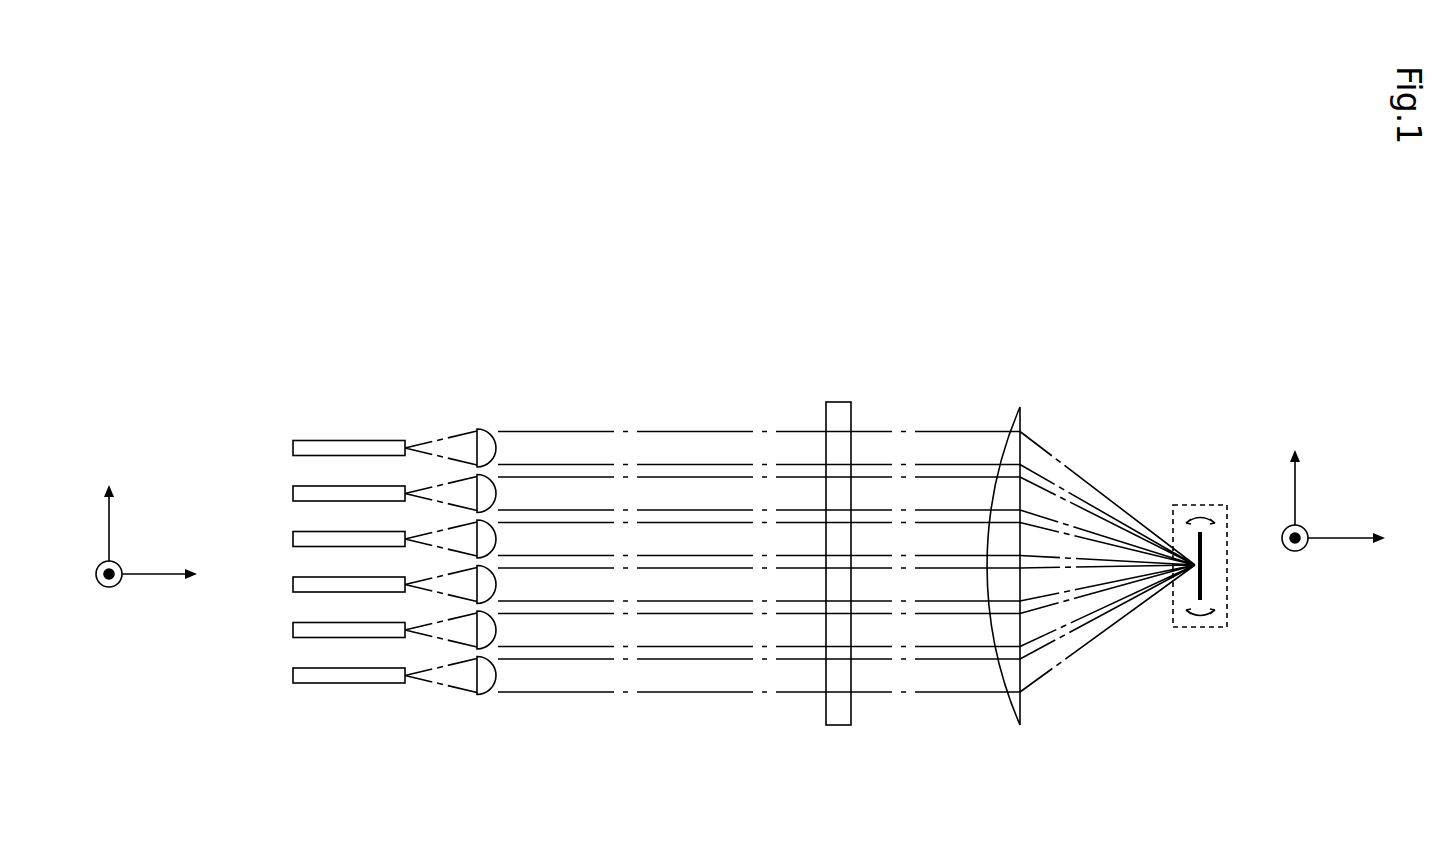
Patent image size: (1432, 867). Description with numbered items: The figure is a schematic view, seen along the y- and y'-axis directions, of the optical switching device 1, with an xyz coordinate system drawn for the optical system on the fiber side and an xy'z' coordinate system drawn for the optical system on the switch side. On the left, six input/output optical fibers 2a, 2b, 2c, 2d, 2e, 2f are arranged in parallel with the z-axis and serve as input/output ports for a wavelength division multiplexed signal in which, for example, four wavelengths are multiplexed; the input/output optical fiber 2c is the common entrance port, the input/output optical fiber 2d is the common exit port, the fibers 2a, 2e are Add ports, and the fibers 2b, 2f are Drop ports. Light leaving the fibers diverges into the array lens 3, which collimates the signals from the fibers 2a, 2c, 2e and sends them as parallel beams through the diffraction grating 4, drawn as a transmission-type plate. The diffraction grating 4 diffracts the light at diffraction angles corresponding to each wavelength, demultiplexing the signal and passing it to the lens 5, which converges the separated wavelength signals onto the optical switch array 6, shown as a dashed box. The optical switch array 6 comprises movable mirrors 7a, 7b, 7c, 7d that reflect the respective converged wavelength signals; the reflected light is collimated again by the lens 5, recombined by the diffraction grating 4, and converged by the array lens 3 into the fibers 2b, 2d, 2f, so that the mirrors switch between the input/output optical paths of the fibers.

The optical switching device 1 is at (787, 256).
The input/output optical fiber 2a is at (294, 442).
The input/output optical fiber 2b is at (294, 488).
The input/output optical fiber 2c is at (294, 533).
The input/output optical fiber 2d is at (294, 578).
The input/output optical fiber 2e is at (294, 624).
The input/output optical fiber 2f is at (294, 670).
The array lens 3 is at (487, 434).
The diffraction grating 4 is at (840, 425).
The lens 5 is at (1015, 425).
The optical switch array 6 is at (1197, 505).
The movable mirror 7a is at (1254, 612).
The movable mirror 7b is at (1254, 612).
The movable mirror 7c is at (1254, 612).
The movable mirror 7d is at (1205, 548).